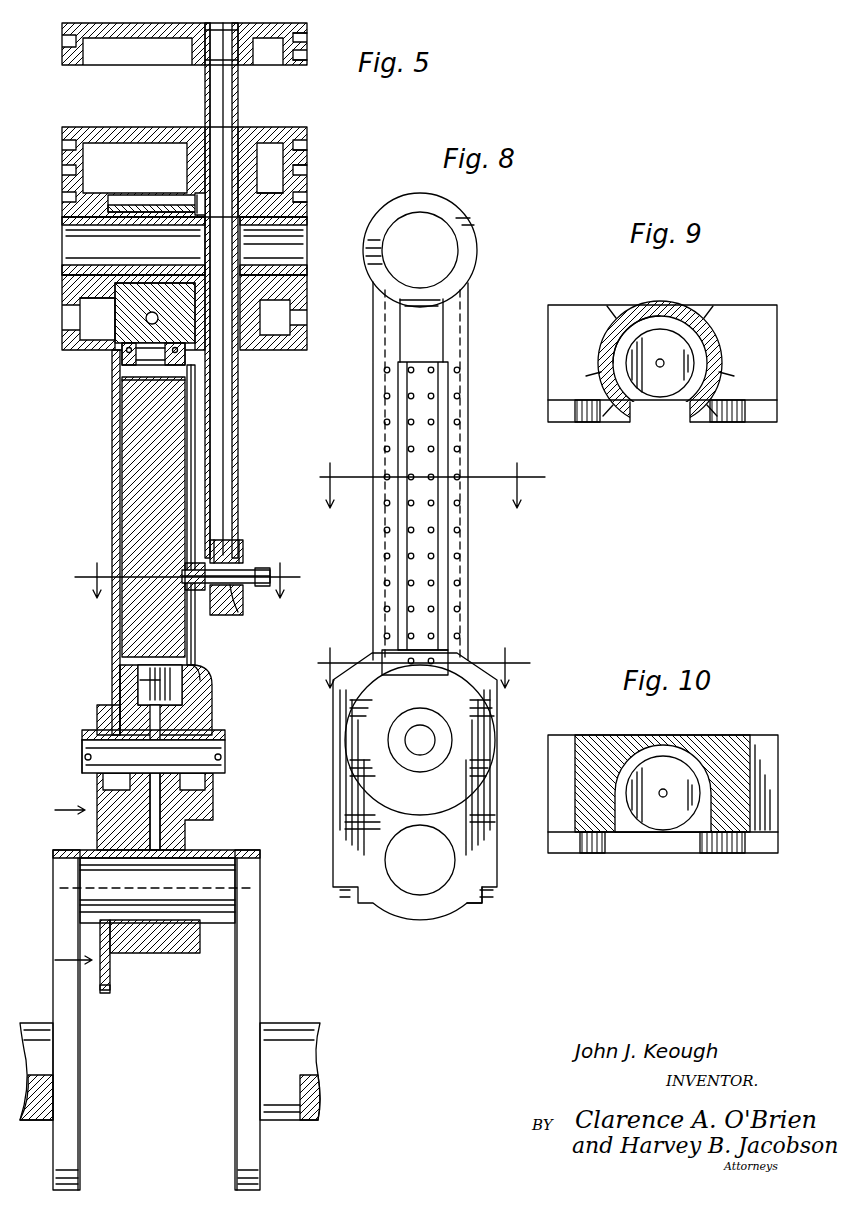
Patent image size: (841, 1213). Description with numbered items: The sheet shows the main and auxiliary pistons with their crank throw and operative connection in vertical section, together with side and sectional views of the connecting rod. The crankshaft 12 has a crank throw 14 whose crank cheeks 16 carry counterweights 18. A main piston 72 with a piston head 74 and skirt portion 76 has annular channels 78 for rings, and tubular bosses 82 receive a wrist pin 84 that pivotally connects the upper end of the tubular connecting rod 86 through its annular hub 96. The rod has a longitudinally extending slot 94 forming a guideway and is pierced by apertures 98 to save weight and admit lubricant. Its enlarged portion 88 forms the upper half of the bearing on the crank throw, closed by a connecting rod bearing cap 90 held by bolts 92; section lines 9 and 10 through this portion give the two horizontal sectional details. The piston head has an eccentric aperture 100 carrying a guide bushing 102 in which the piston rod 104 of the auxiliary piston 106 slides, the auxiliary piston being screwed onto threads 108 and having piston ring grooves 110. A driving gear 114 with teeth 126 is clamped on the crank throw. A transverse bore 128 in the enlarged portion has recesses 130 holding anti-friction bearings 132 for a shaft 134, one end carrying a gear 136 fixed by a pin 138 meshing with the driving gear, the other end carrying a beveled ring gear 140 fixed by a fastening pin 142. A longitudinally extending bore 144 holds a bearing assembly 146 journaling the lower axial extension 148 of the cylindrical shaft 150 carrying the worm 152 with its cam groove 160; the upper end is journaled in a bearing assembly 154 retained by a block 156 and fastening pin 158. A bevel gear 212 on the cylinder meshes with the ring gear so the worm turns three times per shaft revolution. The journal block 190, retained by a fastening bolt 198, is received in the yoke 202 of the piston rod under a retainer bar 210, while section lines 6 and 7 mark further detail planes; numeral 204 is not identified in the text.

In FIG. 5, the section line 6- 6 is at (63, 890).
In FIG. 5, the section line 7- 7 is at (188, 580).
In FIG. 8, the section line 9- 9 is at (426, 485).
In FIG. 8, the section line 10- 10 is at (424, 663).
In FIG. 5, the crankshaft 12 is at (283, 1046).
In FIG. 5, the crank throw 14 is at (215, 862).
In FIG. 5, the crank cheek 16 is at (246, 983).
In FIG. 5, the counterweight 18 is at (246, 1150).
In FIG. 5, the main piston 72 is at (302, 210).
In FIG. 5, the piston head 74 is at (124, 136).
In FIG. 5, the skirt portion 76 is at (257, 325).
In FIG. 5, the annular channel 78 is at (301, 165).
In FIG. 5, the tubular boss 82 is at (93, 210).
In FIG. 5, the wrist pin 84 is at (305, 228).
In FIG. 5, the connecting rod 86 is at (112, 470).
In FIG. 8, the connecting rod 86 is at (382, 414).
In FIG. 9, the connecting rod 86 is at (690, 322).
In FIG. 8, the enlarged portion 88 is at (352, 720).
In FIG. 9, the enlarged portion 88 is at (745, 330).
In FIG. 10, the enlarged portion 88 is at (595, 752).
In FIG. 8, the connecting rod bearing cap 90 is at (433, 920).
In FIG. 8, the bolt 92 is at (478, 906).
In FIG. 5, the longitudinally extending slot 94 is at (191, 435).
In FIG. 8, the longitudinally extending slot 94 is at (436, 570).
In FIG. 9, the longitudinally extending slot 94 is at (676, 415).
In FIG. 5, the annular hub 96 is at (137, 208).
In FIG. 8, the annular hub 96 is at (430, 210).
In FIG. 8, the aperture 98 is at (432, 432).
In FIG. 9, the aperture 98 is at (640, 318).
In FIG. 5, the aperture 100 is at (237, 130).
In FIG. 5, the guide bushing 102 is at (205, 186).
In FIG. 5, the piston rod 104 is at (224, 90).
In FIG. 5, the auxiliary piston 106 is at (163, 36).
In FIG. 5, the threads 108 is at (214, 46).
In FIG. 5, the piston ring groove 110 is at (300, 55).
In FIG. 5, the driving gear 114 is at (110, 976).
In FIG. 5, the teeth 126 is at (104, 996).
In FIG. 5, the transverse bore 128 is at (182, 716).
In FIG. 8, the transverse bore 128 is at (405, 752).
In FIG. 5, the recess 130 is at (112, 710).
In FIG. 8, the recess 130 is at (433, 730).
In FIG. 5, the anti-friction bearing 132 is at (112, 731).
In FIG. 5, the shaft 134 is at (200, 754).
In FIG. 5, the gear 136 is at (92, 742).
In FIG. 5, the pin 138 is at (82, 768).
In FIG. 5, the beveled ring gear 140 is at (212, 674).
In FIG. 5, the fastening pin 142 is at (219, 760).
In FIG. 5, the longitudinally extending bore 144 is at (144, 681).
In FIG. 9, the longitudinally extending bore 144 is at (658, 395).
In FIG. 10, the longitudinally extending bore 144 is at (645, 815).
In FIG. 5, the bearing assembly 146 is at (198, 700).
In FIG. 5, the lower axial extension 148 is at (182, 662).
In FIG. 5, the cylindrical shaft 150 is at (120, 672).
In FIG. 5, the worm 152 is at (135, 511).
In FIG. 5, the bearing assembly 154 is at (122, 368).
In FIG. 5, the block 156 is at (115, 325).
In FIG. 5, the fastening pin 158 is at (153, 313).
In FIG. 5, the cam groove 160 is at (125, 423).
In FIG. 5, the journal block 190 is at (238, 604).
In FIG. 5, the fastening bolt 198 is at (256, 565).
In FIG. 5, the yoke 202 is at (230, 548).
In FIG. 5, the block face 204 is at (236, 528).
In FIG. 5, the retainer bar 210 is at (245, 592).
In FIG. 5, the bevel gear 212 is at (143, 664).